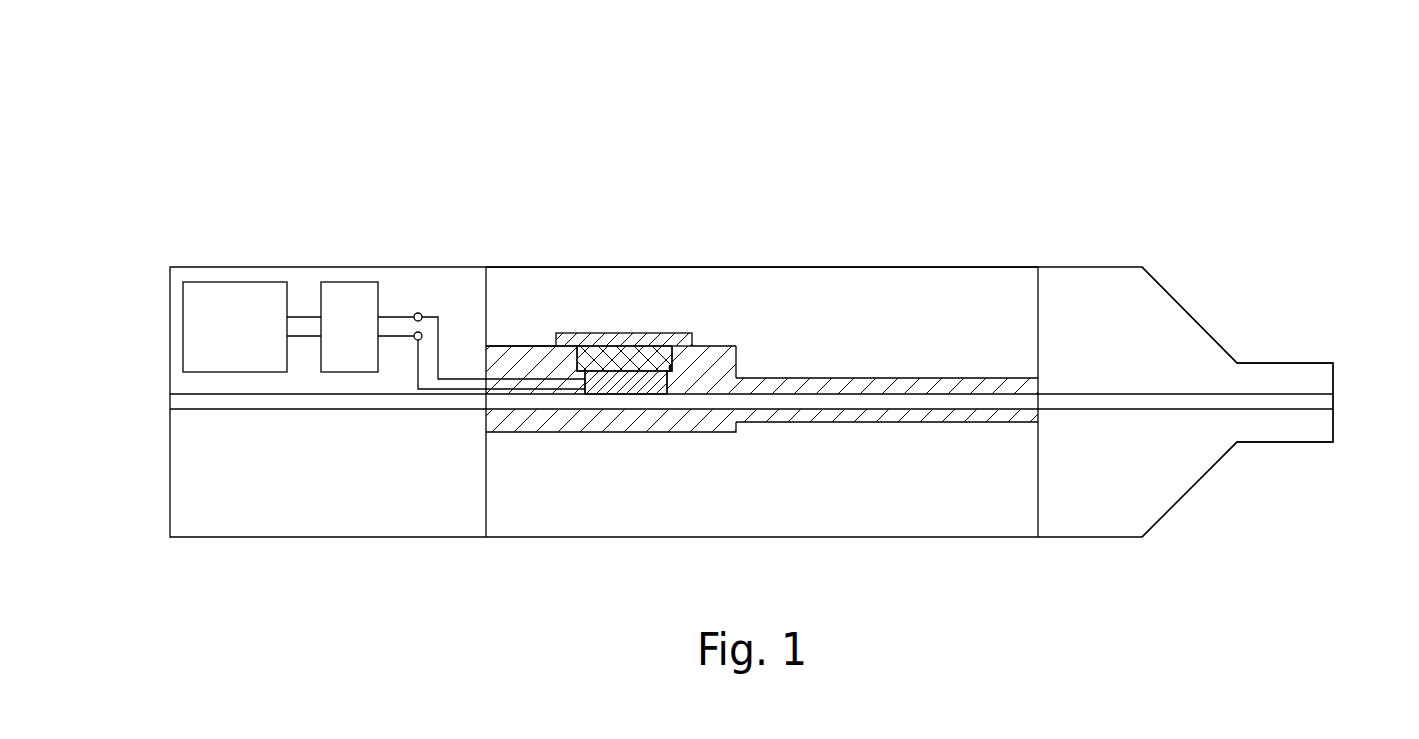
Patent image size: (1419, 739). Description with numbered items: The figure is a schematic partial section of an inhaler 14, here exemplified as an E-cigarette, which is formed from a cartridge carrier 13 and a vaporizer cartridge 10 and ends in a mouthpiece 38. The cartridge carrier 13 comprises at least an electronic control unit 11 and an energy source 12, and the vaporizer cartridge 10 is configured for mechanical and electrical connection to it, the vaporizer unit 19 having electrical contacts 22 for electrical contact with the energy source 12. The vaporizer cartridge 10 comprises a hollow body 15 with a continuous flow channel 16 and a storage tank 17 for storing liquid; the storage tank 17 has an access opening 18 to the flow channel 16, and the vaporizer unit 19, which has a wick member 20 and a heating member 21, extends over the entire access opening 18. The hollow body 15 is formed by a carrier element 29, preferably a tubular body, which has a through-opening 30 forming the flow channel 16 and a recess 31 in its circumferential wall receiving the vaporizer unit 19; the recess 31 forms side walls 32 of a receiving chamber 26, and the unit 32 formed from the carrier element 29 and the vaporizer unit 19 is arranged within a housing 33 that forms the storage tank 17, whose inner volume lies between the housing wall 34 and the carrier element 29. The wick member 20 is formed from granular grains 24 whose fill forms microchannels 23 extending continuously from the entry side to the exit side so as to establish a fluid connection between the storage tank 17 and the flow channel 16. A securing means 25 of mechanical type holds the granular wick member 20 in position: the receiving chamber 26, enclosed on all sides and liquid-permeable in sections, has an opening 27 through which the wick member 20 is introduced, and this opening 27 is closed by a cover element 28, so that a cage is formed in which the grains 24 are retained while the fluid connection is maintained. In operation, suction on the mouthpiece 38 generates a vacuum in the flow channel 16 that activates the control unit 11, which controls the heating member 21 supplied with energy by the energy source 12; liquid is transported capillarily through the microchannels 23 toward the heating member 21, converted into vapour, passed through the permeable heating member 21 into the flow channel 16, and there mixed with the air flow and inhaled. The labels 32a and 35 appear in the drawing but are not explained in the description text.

The vaporizer cartridge 10 is at (1040, 180).
The electronic control unit 11 is at (343, 303).
The energy source 12 is at (242, 303).
The cartridge carrier 13 is at (285, 257).
The inhaler 14 is at (666, 334).
The hollow body 15 is at (681, 313).
The flow channel 16 is at (887, 488).
The storage tank 17 is at (987, 282).
The access opening 18 is at (650, 396).
The vaporizer unit 19 is at (655, 351).
The wick member 20 is at (617, 348).
The heating member 21 is at (634, 392).
The electrical contacts 22 is at (392, 317).
The microchannels 23 is at (597, 394).
The granular grains 24 is at (670, 372).
The securing means 25 is at (677, 373).
The receiving chamber 26 is at (520, 265).
The opening 27 is at (573, 332).
The cover element 28 is at (624, 255).
The carrier element 29 is at (760, 347).
The through-opening 30 is at (917, 400).
The recess 31 is at (540, 348).
The side walls 32 is at (688, 347).
The insulating material portion 32a is at (670, 347).
The housing 33 is at (762, 212).
The housing wall 34 is at (915, 265).
The electrode layer 35 is at (640, 340).
The mouthpiece 38 is at (1168, 292).